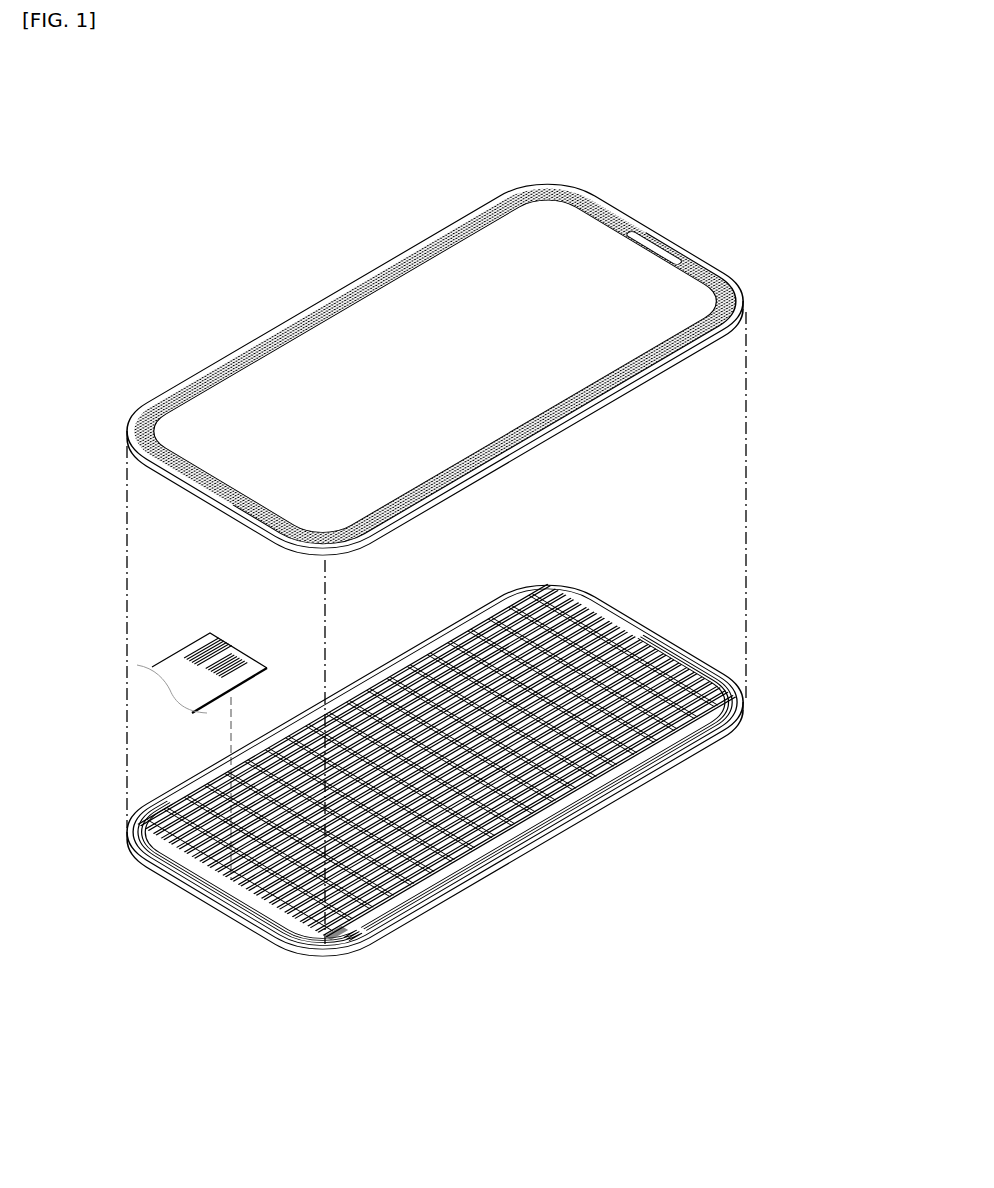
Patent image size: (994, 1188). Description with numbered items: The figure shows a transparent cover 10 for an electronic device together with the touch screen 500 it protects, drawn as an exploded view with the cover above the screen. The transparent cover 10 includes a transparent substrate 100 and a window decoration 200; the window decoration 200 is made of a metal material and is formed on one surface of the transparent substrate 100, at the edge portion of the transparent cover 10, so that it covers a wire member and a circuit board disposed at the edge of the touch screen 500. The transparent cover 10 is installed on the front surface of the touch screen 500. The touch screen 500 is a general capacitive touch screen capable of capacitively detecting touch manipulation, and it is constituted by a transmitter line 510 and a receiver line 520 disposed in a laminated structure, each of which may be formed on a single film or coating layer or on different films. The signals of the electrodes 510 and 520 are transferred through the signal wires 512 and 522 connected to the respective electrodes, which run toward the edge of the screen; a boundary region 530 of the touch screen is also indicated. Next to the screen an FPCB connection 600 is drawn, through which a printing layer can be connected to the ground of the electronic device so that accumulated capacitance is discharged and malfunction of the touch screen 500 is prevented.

The transparent cover 10 is at (735, 266).
The transparent substrate 100 is at (668, 236).
The window decoration 200 is at (586, 207).
The touch screen 500 is at (699, 667).
The transmitter line 510 is at (506, 843).
The signal wire 512 is at (365, 940).
The receiver line 520 is at (565, 632).
The signal wire 522 is at (283, 933).
The sensor substrate boundary 530 is at (656, 653).
The FPCB connection 600 is at (172, 634).